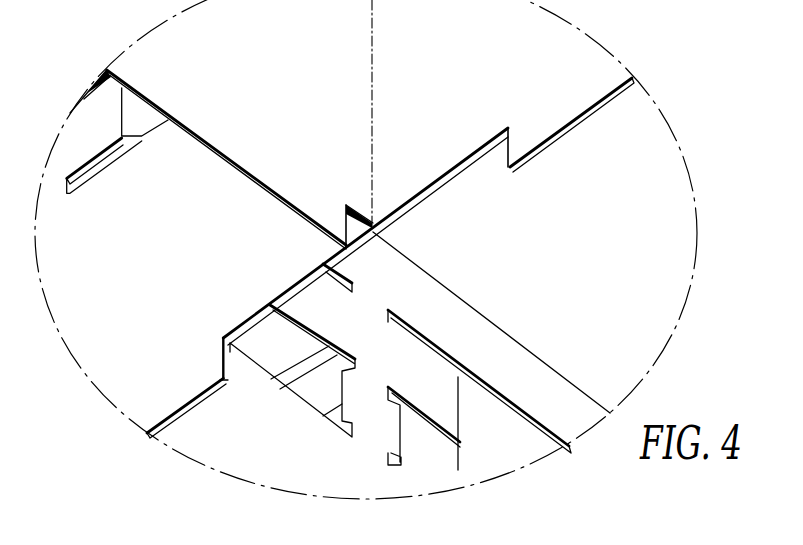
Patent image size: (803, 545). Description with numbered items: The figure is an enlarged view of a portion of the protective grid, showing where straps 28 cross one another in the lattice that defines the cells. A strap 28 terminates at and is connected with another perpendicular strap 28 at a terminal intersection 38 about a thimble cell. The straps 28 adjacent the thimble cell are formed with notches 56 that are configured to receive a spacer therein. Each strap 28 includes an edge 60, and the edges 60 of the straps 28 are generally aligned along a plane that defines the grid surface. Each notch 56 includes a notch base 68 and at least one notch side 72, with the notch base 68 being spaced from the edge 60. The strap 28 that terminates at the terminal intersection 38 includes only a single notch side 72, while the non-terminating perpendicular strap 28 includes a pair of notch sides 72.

The strap 28 is at (230, 163).
The terminal intersection 38 is at (373, 40).
The notch 56 is at (374, 240).
The edge 60 is at (585, 120).
The notch base 68 is at (364, 212).
The notch side 72 is at (356, 228).